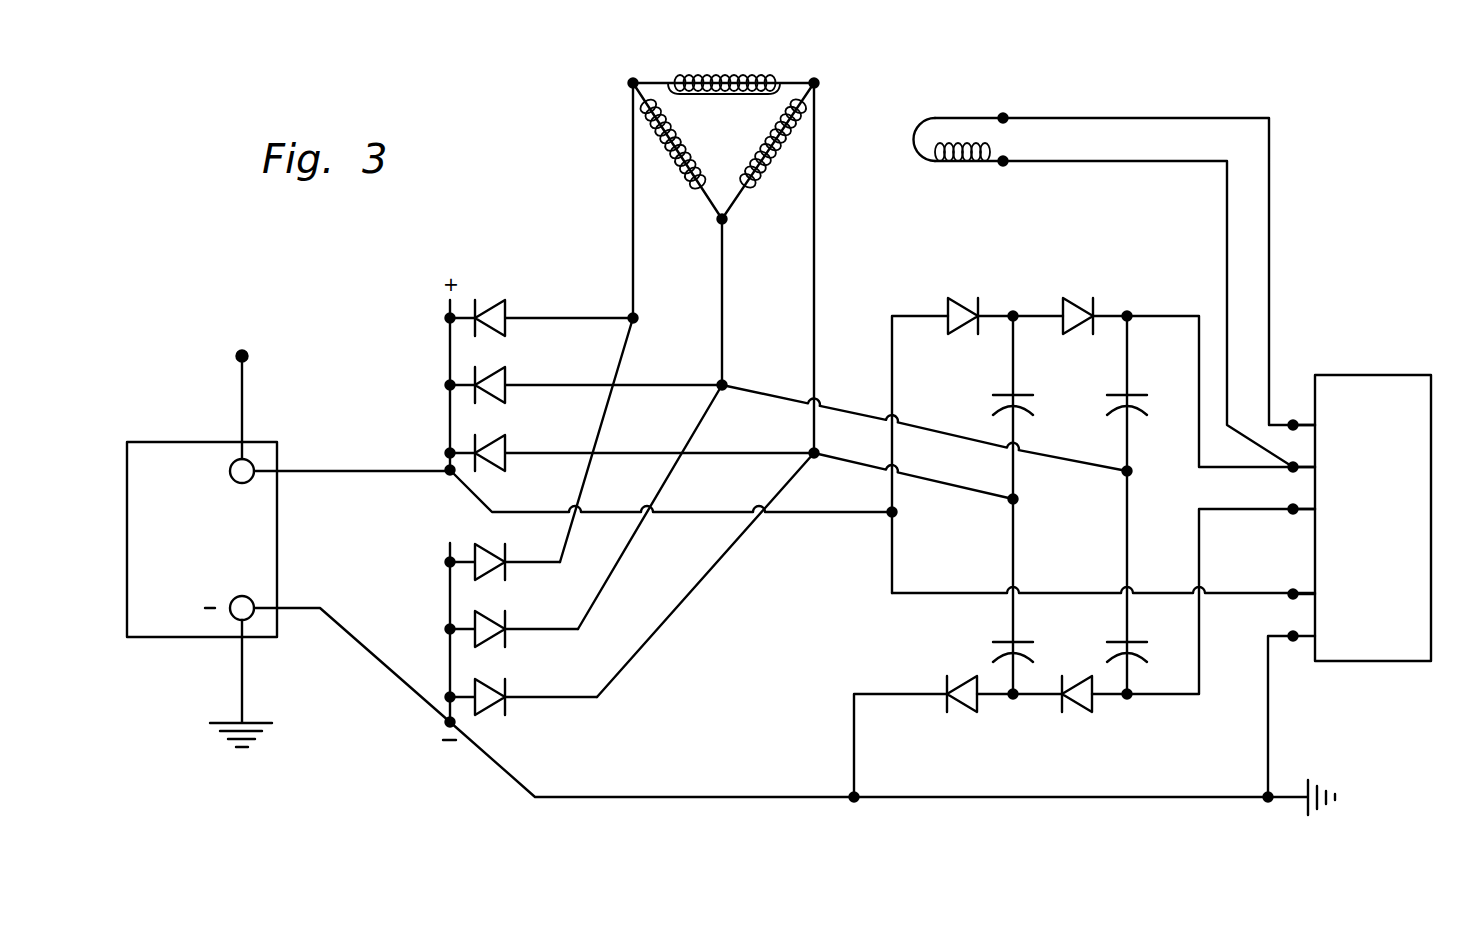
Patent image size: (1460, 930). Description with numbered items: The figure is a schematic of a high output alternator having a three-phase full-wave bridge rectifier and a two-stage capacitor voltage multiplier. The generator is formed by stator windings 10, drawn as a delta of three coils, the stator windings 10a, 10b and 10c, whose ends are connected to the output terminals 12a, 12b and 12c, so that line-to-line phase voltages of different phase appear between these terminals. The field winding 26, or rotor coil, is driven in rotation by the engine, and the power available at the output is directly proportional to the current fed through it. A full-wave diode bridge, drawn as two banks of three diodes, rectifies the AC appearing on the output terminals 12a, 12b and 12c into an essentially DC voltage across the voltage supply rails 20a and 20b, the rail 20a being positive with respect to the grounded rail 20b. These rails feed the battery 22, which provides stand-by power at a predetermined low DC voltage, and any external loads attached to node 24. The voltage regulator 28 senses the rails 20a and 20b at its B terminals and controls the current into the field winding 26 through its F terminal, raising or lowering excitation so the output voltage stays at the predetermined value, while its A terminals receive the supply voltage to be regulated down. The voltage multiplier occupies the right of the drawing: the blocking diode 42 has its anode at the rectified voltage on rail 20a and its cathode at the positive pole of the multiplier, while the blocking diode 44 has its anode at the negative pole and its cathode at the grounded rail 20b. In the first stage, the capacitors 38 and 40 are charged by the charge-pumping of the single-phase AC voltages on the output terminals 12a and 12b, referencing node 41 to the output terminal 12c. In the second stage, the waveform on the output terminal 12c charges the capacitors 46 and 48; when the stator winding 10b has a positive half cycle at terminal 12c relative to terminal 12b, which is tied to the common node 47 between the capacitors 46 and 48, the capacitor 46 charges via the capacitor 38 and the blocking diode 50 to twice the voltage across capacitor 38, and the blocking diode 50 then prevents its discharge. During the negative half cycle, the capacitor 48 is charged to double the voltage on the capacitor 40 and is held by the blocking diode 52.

The stator windings 10 is at (736, 141).
The stator winding 10a is at (706, 80).
The stator winding 10b is at (747, 187).
The stator winding 10c is at (698, 187).
The output terminal 12a is at (640, 317).
The output terminal 12b is at (728, 384).
The output terminal 12c is at (820, 453).
The voltage supply rail 20a is at (326, 471).
The voltage supply rail 20b is at (323, 609).
The battery 22 is at (170, 640).
The node 24 is at (242, 393).
The field winding 26 is at (960, 164).
The voltage regulator 28 is at (1392, 375).
The capacitor 38 is at (1024, 396).
The capacitor 40 is at (1024, 643).
The node 41 is at (1020, 500).
The blocking diode 42 is at (960, 334).
The blocking diode 44 is at (963, 712).
The capacitor 46 is at (1136, 395).
The node 47 is at (1133, 471).
The capacitor 48 is at (1136, 643).
The blocking diode 50 is at (1082, 334).
The blocking diode 52 is at (1082, 712).